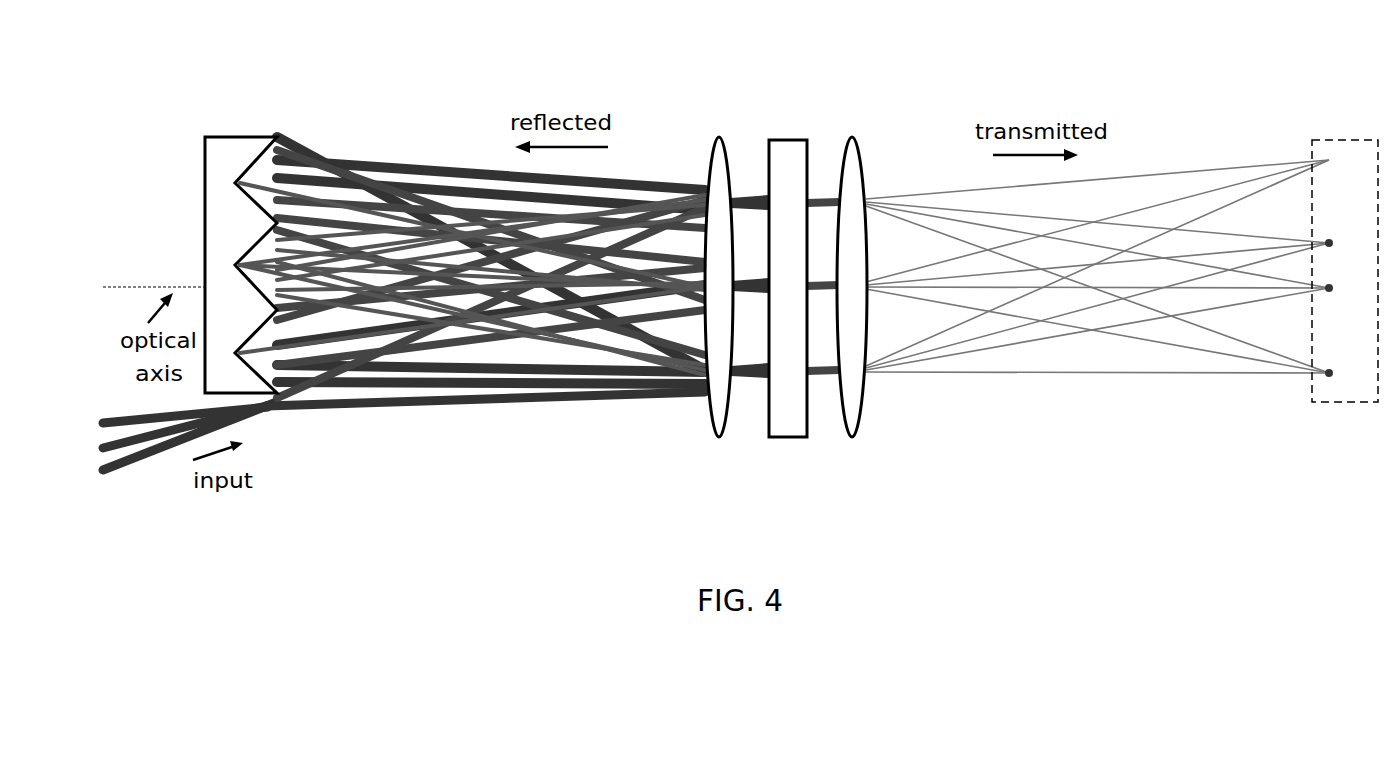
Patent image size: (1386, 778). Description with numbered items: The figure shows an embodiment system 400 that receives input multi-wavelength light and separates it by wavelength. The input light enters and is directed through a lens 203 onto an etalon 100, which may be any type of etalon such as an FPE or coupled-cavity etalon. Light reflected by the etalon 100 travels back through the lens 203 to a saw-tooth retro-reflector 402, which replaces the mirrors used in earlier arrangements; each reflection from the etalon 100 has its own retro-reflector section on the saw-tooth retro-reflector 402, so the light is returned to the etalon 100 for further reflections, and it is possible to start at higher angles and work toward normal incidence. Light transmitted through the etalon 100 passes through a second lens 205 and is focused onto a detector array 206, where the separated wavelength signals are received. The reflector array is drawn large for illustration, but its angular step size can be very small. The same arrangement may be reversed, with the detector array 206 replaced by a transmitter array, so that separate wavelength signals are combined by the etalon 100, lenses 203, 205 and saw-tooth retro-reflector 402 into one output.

The system 400 is at (300, 103).
The saw-tooth retro-reflector 402 is at (208, 214).
The lens 203 is at (708, 423).
The etalon 100 is at (790, 438).
The lens 205 is at (857, 434).
The detector array 206 is at (1333, 143).